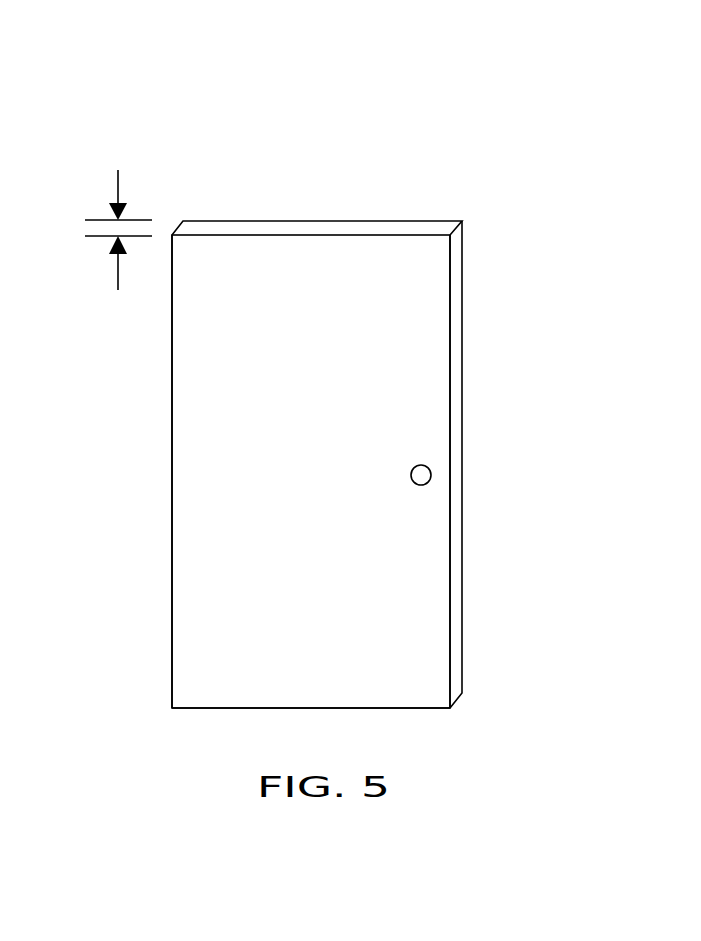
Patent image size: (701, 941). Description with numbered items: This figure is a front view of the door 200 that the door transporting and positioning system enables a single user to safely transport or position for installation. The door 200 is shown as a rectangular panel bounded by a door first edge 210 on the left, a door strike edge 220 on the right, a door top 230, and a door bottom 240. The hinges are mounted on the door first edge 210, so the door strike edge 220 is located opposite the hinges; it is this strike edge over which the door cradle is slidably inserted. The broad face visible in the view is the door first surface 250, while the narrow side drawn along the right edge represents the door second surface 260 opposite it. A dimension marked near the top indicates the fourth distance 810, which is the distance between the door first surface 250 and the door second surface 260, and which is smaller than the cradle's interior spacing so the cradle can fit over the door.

The door 200 is at (216, 164).
The door first edge 210 is at (172, 353).
The door strike edge 220 is at (452, 508).
The door top 230 is at (313, 230).
The door bottom 240 is at (228, 708).
The door first surface 250 is at (205, 537).
The door second surface 260 is at (463, 348).
The fourth distance 810 is at (100, 230).